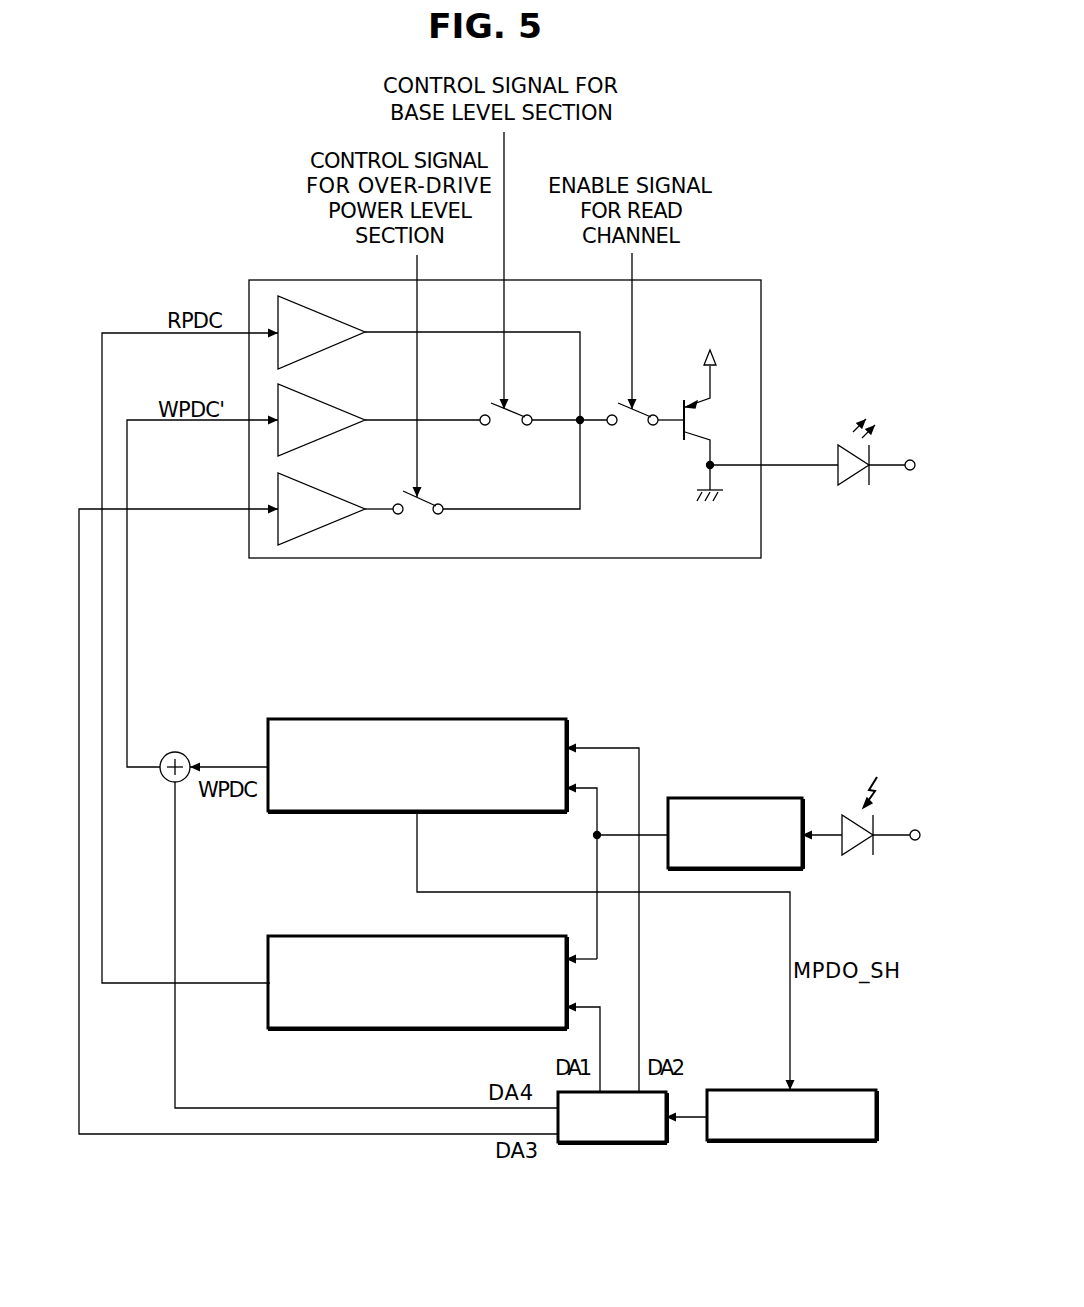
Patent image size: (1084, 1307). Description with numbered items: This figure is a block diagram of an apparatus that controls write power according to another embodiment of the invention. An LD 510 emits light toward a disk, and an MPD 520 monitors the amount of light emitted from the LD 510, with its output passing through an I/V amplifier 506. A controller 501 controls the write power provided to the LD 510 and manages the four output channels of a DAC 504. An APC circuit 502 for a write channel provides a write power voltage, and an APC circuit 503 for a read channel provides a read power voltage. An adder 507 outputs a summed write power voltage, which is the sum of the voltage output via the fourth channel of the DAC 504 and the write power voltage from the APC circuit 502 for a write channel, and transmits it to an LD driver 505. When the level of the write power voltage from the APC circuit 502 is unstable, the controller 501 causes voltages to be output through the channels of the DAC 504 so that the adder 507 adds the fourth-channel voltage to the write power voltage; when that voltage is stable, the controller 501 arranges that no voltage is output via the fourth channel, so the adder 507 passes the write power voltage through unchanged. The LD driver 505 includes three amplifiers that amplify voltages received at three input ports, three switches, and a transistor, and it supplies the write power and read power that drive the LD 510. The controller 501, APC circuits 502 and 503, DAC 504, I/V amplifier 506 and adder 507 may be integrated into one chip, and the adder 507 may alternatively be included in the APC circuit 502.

The controller 501 is at (790, 1142).
The APC circuit for a write channel 502 is at (473, 717).
The APC circuit for a read channel 503 is at (473, 935).
The DAC 504 is at (610, 1144).
The LD driver 505 is at (693, 277).
The I/V amplifier 506 is at (743, 797).
The adder 507 is at (175, 752).
The LD 510 is at (876, 484).
The MPD 520 is at (881, 847).